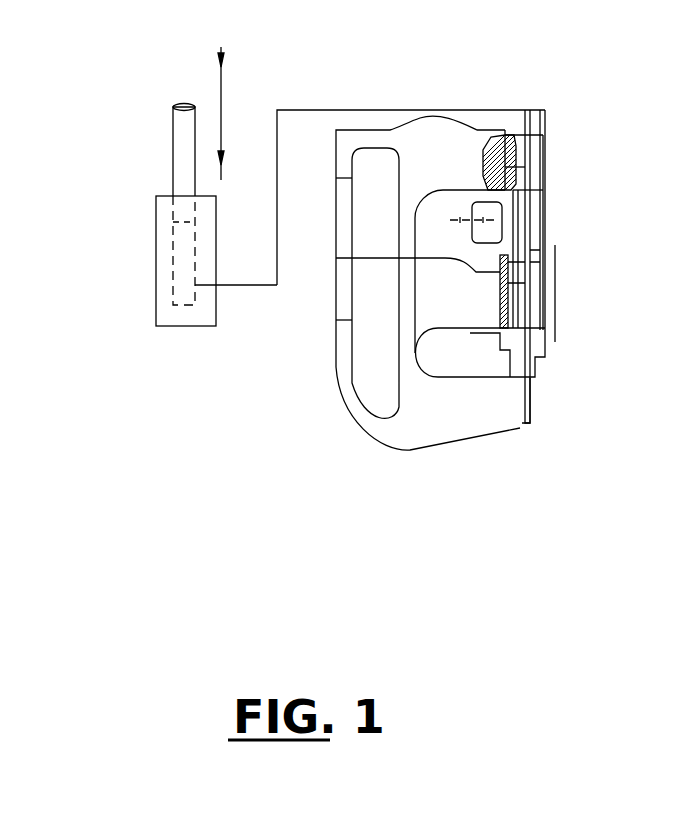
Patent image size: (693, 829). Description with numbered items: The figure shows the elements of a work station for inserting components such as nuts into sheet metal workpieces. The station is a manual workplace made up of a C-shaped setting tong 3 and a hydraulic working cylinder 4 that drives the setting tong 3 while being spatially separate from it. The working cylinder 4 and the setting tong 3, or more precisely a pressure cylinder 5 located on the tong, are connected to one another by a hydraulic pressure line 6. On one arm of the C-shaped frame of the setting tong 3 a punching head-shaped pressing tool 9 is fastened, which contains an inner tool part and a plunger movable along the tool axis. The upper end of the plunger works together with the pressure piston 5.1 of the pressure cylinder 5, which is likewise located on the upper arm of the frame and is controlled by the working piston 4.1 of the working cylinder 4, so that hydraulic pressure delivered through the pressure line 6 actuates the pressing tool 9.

The setting tong 3 is at (497, 443).
The hydraulic working cylinder 4 is at (185, 362).
The working piston 4.1 is at (183, 208).
The pressure cylinder 5 is at (547, 139).
The pressure piston 5.1 is at (513, 150).
The hydraulic pressure line 6 is at (343, 117).
The pressing tool 9 is at (557, 248).